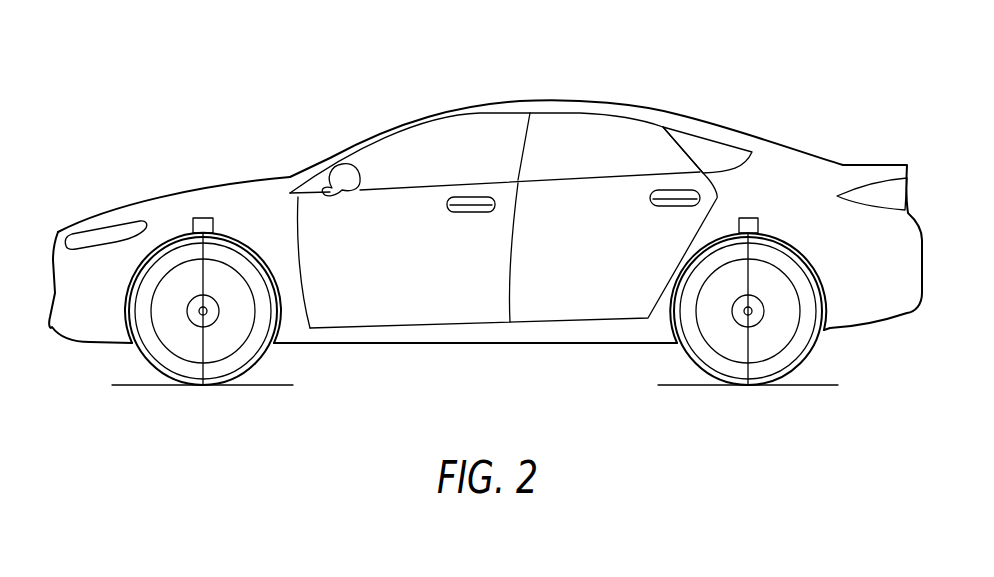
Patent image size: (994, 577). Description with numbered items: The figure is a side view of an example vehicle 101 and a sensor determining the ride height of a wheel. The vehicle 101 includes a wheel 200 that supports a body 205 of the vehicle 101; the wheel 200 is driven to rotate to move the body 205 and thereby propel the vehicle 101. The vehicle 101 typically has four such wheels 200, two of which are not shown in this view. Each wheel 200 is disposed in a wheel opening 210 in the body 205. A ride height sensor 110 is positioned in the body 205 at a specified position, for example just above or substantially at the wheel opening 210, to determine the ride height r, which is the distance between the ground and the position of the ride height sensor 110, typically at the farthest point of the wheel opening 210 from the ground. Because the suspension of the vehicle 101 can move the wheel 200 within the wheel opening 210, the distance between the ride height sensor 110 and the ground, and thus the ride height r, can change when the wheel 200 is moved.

The vehicle 101 is at (192, 107).
The ride height sensor 110 is at (200, 218).
The wheel 200 is at (177, 262).
The body 205 is at (258, 203).
The wheel opening 210 is at (123, 311).
The ride height r is at (205, 348).